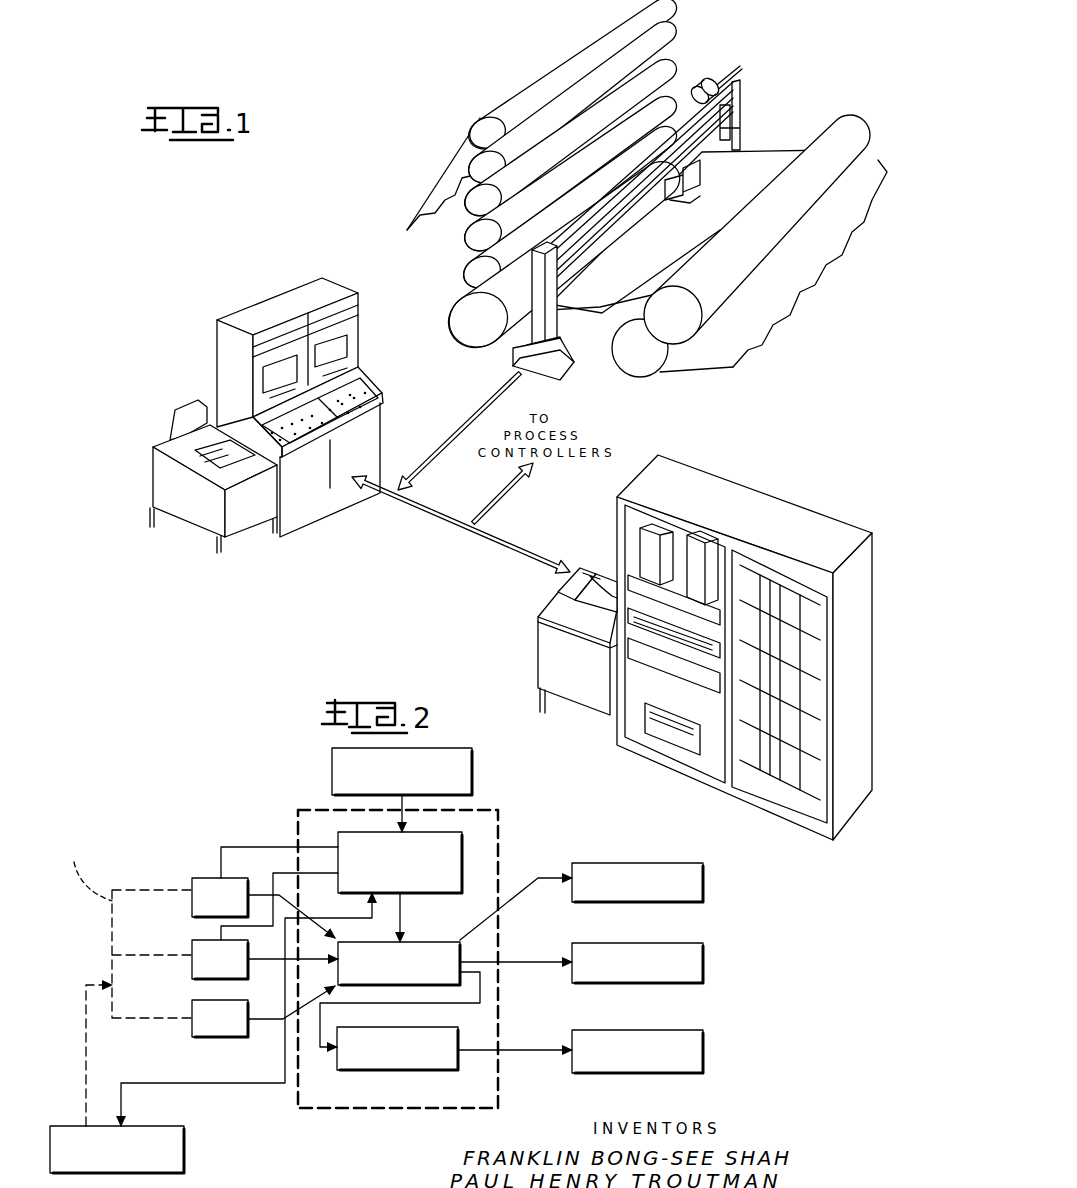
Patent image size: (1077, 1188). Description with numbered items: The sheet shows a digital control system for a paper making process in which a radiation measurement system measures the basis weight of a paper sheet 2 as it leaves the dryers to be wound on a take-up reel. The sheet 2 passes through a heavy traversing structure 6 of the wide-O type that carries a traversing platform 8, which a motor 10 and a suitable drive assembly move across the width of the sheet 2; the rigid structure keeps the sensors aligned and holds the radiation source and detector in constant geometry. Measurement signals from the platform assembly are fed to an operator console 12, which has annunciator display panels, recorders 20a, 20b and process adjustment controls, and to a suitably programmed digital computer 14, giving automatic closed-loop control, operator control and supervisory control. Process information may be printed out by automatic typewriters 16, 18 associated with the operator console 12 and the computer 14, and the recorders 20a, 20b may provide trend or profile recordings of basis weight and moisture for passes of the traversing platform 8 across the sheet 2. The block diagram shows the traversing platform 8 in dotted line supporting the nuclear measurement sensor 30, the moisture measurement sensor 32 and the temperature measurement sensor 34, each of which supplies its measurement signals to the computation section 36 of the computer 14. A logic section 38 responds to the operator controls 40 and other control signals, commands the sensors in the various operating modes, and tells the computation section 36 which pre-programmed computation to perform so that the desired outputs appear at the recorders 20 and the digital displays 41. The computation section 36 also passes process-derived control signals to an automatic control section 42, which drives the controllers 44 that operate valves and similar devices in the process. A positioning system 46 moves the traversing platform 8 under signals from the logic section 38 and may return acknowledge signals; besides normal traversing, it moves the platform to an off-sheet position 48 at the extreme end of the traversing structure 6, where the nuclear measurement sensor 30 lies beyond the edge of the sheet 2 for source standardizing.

In FIG. 1, the paper sheet 2 is at (752, 153).
In FIG. 1, the traversing structure 6 is at (535, 296).
In FIG. 1, the traversing platform 8 is at (685, 165).
In FIG. 2, the traversing platform 8 is at (112, 930).
In FIG. 1, the motor 10 is at (710, 75).
In FIG. 1, the operator console 12 is at (290, 406).
In FIG. 1, the digital computer 14 is at (617, 525).
In FIG. 2, the digital computer 14 is at (498, 812).
In FIG. 1, the automatic typewriter 16 is at (160, 478).
In FIG. 1, the automatic typewriter 18 is at (538, 647).
In FIG. 2, the recorders 20 is at (630, 863).
In FIG. 1, the recorder 20a is at (270, 378).
In FIG. 1, the recorder 20b is at (338, 350).
In FIG. 2, the nuclear measurement sensor 30 is at (200, 878).
In FIG. 2, the moisture measurement sensor 32 is at (195, 945).
In FIG. 2, the temperature measurement sensor 34 is at (195, 1005).
In FIG. 2, the computation section 36 is at (433, 942).
In FIG. 2, the logic section 38 is at (462, 848).
In FIG. 2, the operator controls 40 is at (468, 752).
In FIG. 2, the digital displays 41 is at (636, 943).
In FIG. 2, the automatic control section 42 is at (408, 1072).
In FIG. 2, the controllers 44 is at (636, 1030).
In FIG. 2, the positioning system 46 is at (168, 1126).
In FIG. 1, the off-sheet position 48 is at (740, 107).